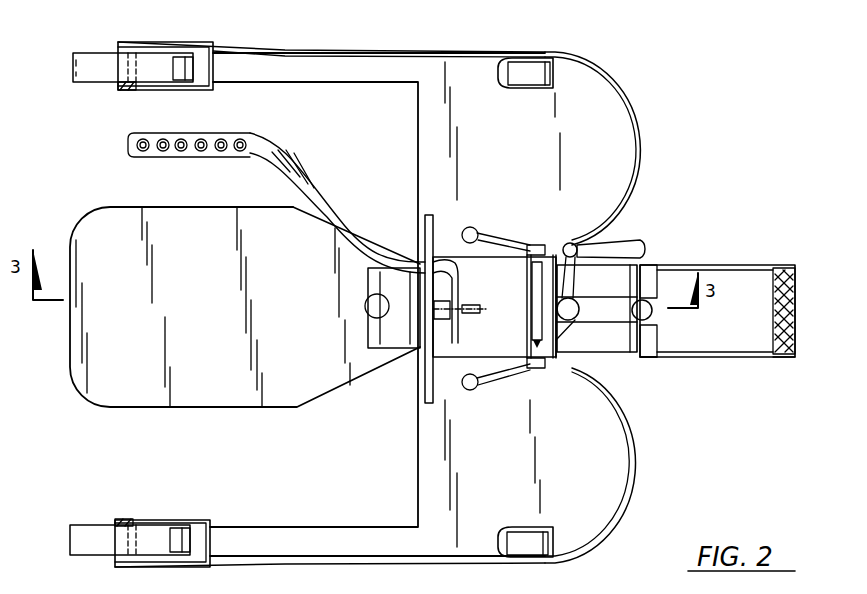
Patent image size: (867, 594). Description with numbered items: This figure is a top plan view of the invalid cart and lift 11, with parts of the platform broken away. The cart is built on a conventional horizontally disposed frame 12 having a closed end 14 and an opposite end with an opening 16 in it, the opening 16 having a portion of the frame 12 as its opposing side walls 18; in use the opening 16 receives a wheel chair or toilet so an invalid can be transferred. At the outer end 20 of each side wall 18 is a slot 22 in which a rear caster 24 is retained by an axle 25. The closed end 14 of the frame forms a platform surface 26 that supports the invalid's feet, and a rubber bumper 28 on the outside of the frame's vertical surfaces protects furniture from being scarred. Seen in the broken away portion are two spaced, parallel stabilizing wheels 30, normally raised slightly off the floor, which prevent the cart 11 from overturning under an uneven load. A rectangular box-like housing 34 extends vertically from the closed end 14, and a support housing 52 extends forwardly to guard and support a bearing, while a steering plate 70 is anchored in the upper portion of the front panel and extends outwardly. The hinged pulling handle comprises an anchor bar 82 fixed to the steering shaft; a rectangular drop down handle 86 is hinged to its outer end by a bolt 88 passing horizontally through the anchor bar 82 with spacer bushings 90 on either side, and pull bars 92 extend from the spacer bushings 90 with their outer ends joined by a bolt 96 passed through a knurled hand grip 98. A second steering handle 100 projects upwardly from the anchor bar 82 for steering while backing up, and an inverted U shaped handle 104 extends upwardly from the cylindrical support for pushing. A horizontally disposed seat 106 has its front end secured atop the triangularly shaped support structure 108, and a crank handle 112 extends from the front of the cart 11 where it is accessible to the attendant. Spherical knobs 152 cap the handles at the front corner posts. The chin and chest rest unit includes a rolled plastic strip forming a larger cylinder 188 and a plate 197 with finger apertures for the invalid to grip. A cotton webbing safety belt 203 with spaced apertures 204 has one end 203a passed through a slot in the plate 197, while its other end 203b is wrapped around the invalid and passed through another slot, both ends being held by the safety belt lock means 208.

The cart and lift 11 is at (700, 137).
The frame 12 is at (471, 70).
The closed end 14 is at (607, 107).
The opening 16 is at (324, 472).
The side walls 18 is at (330, 73).
The outer end 20 is at (227, 68).
The slot 22 is at (202, 62).
The rear caster 24 is at (93, 55).
The axle 25 is at (133, 91).
The platform surface 26 is at (530, 141).
The rubber bumper 28 is at (378, 50).
The stabilizing wheels 30 is at (544, 68).
The housing 34 is at (448, 376).
The support housing 52 is at (613, 291).
The steering plate 70 is at (560, 333).
The anchor bar 82 is at (617, 313).
The drop down handle 86 is at (778, 268).
The bolt 88 is at (643, 360).
The spacer bushings 90 is at (651, 283).
The pull bars 92 is at (730, 264).
The bolt 96 is at (790, 358).
The knurled hand grip 98 is at (797, 305).
The second steering handle 100 is at (728, 331).
The handle 104 is at (541, 368).
The seat 106 is at (220, 361).
The support structure 108 is at (364, 305).
The crank handle 112 is at (632, 245).
The spherical knobs 152 is at (478, 228).
The larger cylinder 188 is at (372, 280).
The plate 197 is at (420, 378).
The safety belt 203 is at (323, 187).
The one end of the belt 203a is at (458, 305).
The other end of the belt 203b is at (125, 145).
The spaced apertures 204 is at (182, 152).
The safety belt lock means 208 is at (482, 319).